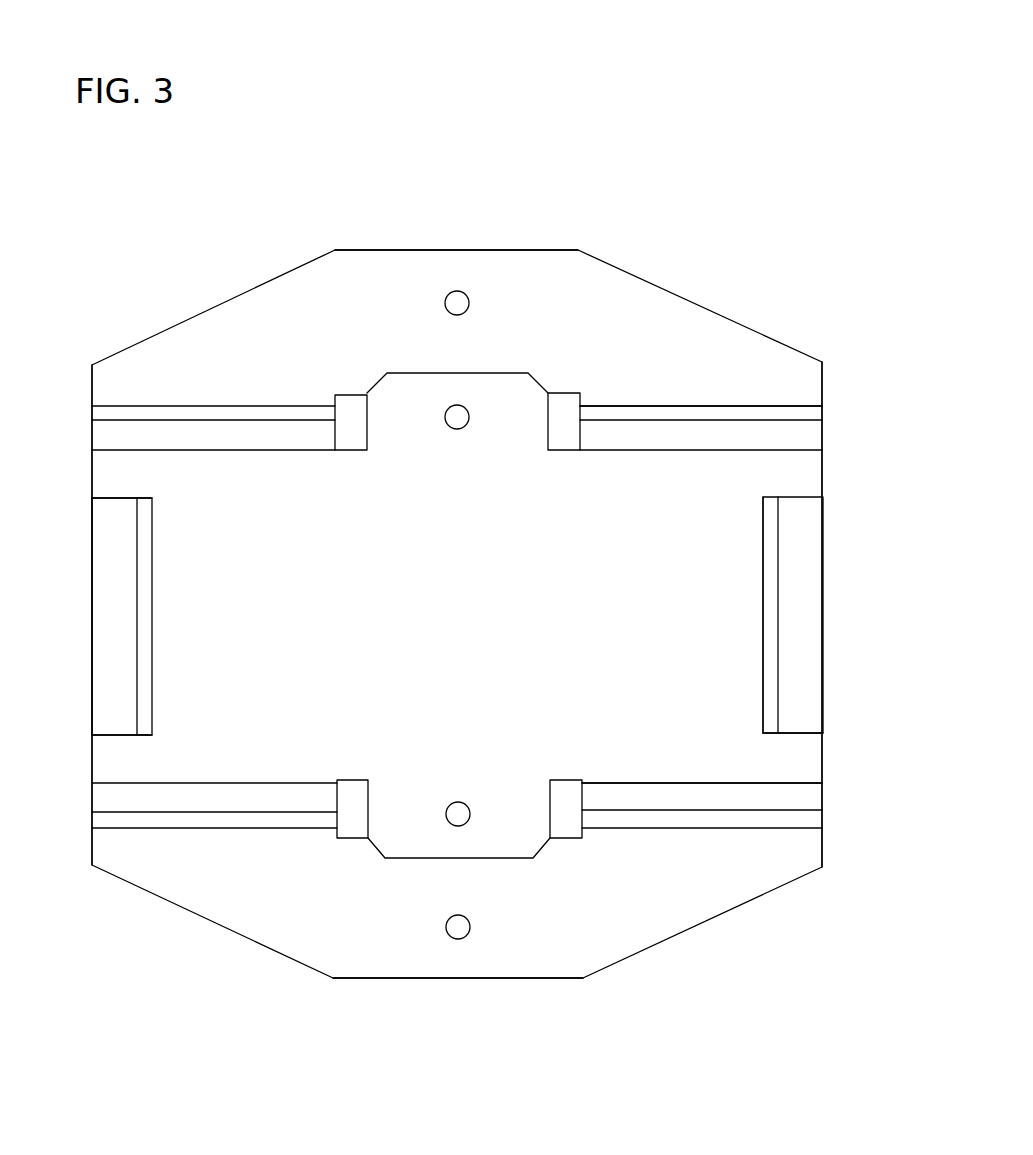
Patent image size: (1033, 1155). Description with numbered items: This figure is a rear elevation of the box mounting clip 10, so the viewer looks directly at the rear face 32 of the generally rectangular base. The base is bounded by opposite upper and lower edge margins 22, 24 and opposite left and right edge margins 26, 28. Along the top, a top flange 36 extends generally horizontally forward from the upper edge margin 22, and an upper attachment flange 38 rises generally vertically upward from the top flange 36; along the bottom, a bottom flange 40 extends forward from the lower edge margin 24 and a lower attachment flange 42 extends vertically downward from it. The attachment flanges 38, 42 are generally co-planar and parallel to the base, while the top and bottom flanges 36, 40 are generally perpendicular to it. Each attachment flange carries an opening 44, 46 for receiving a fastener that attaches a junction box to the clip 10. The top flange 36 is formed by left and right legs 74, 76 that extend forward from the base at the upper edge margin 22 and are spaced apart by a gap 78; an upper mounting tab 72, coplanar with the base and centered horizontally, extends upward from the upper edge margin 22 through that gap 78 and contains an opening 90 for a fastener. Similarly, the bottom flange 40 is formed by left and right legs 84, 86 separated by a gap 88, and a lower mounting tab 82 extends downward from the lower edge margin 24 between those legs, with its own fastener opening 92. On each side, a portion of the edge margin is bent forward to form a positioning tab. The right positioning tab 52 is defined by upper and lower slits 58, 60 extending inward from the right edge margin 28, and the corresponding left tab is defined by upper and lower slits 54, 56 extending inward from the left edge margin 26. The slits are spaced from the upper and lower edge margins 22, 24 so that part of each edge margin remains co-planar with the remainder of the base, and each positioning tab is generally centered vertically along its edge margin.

The box mounting clip 10 is at (755, 124).
The upper edge margin 22 is at (650, 455).
The lower edge margin 24 is at (603, 780).
The left edge margin 26 is at (825, 465).
The right edge margin 28 is at (90, 468).
The rear face 32 is at (457, 609).
The top flange 36 is at (830, 424).
The upper attachment flange 38 is at (645, 310).
The bottom flange 40 is at (832, 791).
The lower attachment flange 42 is at (598, 952).
The opening 44 is at (466, 295).
The opening 46 is at (466, 935).
The right positioning tab 52 is at (92, 613).
The upper slit 54 is at (818, 505).
The lower slit 56 is at (805, 733).
The upper slit 58 is at (108, 500).
The lower slit 60 is at (108, 733).
The upper mounting tab 72 is at (518, 400).
The left leg 74 is at (712, 435).
The right leg 76 is at (232, 435).
The gap 78 is at (354, 432).
The lower mounting tab 82 is at (395, 832).
The left leg 84 is at (665, 800).
The right leg 86 is at (218, 800).
The gap 88 is at (355, 806).
The opening 90 is at (458, 415).
The opening 92 is at (462, 808).